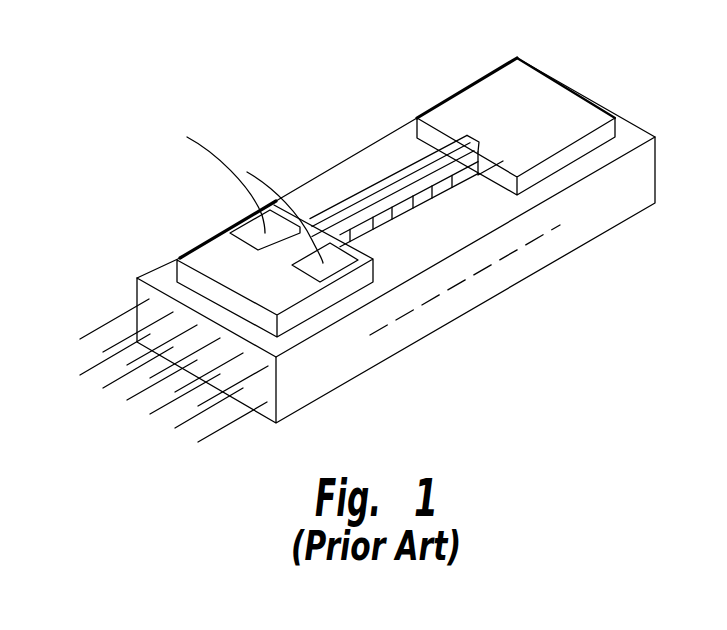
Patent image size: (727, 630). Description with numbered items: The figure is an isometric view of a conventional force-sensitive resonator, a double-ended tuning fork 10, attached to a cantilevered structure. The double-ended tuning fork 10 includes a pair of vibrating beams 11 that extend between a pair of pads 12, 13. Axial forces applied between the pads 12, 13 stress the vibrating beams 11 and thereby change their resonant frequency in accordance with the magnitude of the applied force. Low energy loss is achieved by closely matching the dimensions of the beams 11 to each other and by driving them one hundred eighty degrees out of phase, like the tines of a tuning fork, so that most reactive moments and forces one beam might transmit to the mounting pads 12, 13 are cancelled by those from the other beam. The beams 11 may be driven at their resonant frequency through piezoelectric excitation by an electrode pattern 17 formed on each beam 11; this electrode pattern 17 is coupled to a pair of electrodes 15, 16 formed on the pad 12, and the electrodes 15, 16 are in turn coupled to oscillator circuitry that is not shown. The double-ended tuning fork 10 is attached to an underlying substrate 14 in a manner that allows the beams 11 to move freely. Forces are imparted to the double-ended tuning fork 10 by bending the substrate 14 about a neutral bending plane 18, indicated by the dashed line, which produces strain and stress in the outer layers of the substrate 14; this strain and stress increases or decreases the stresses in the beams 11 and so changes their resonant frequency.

The double-ended tuning fork 10 is at (286, 92).
The vibrating beams 11 is at (355, 197).
The pad 12 is at (210, 260).
The pad 13 is at (493, 107).
The substrate 14 is at (403, 147).
The electrode 15 is at (237, 222).
The electrode 16 is at (323, 273).
The electrode pattern 17 is at (313, 137).
The neutral bending plane 18 is at (477, 273).